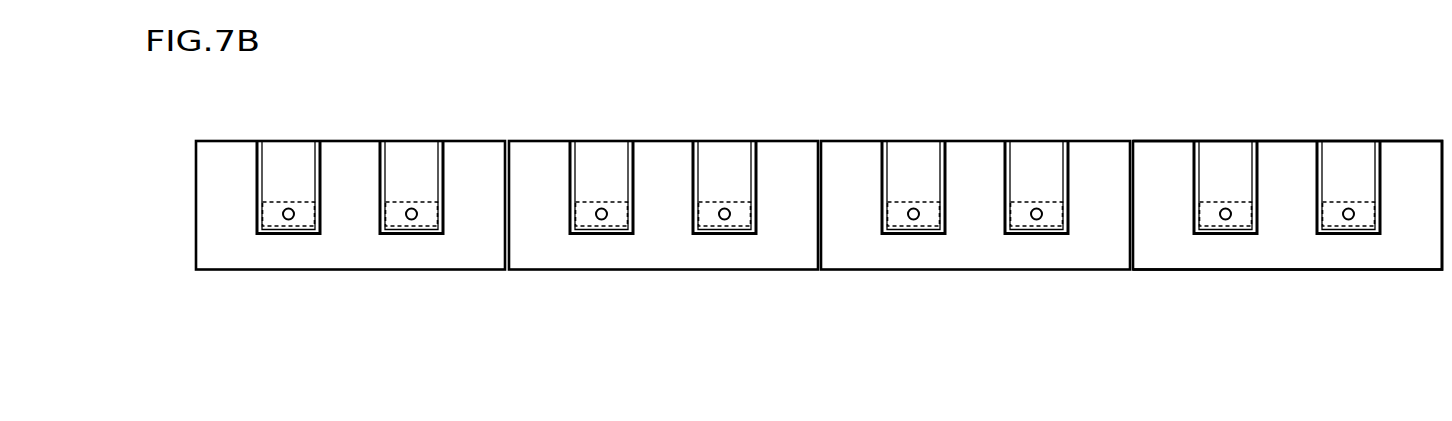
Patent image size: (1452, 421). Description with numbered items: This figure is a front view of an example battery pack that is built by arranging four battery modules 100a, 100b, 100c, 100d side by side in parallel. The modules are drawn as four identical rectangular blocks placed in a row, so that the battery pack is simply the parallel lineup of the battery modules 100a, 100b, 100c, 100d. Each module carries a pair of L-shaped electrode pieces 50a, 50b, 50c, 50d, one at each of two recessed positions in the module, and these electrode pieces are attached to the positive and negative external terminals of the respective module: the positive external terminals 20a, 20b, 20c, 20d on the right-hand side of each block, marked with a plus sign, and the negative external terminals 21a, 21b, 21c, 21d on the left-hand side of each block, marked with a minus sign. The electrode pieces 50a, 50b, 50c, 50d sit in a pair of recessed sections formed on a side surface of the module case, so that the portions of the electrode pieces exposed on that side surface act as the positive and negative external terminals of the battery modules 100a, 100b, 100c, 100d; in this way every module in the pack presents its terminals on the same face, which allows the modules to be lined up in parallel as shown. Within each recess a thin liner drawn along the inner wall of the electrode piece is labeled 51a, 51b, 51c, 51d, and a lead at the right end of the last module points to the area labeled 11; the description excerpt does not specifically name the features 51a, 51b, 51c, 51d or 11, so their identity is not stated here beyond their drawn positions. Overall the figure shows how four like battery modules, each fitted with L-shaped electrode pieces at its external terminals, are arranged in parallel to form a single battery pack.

The battery module 100a is at (349, 270).
The L-shaped electrode piece 50a is at (293, 140).
The insulating film 51a is at (268, 148).
The negative external terminal 21a is at (263, 206).
The positive external terminal 20a is at (427, 214).
The battery module 100b is at (662, 270).
The L-shaped electrode piece 50b is at (606, 140).
The insulating film 51b is at (581, 148).
The negative external terminal 21b is at (576, 206).
The positive external terminal 20b is at (740, 214).
The battery module 100c is at (981, 270).
The L-shaped electrode piece 50c is at (918, 140).
The insulating film 51c is at (893, 148).
The negative external terminal 21c is at (888, 206).
The positive external terminal 20c is at (1052, 214).
The battery module 100d is at (1288, 270).
The L-shaped electrode piece 50d is at (1230, 140).
The insulating film 51d is at (1205, 148).
The negative external terminal 21d is at (1200, 206).
The positive external terminal 20d is at (1364, 214).
The semiconductor substrate 11 is at (1420, 157).